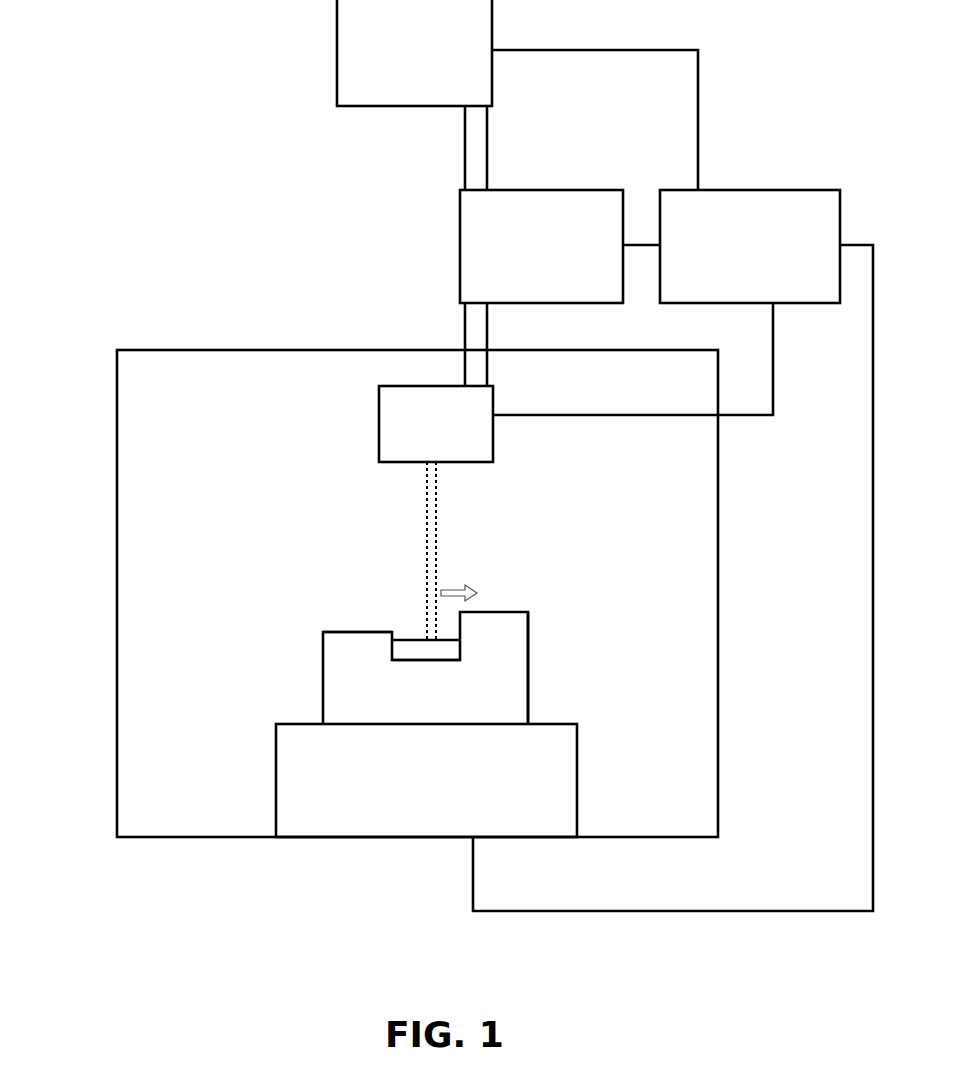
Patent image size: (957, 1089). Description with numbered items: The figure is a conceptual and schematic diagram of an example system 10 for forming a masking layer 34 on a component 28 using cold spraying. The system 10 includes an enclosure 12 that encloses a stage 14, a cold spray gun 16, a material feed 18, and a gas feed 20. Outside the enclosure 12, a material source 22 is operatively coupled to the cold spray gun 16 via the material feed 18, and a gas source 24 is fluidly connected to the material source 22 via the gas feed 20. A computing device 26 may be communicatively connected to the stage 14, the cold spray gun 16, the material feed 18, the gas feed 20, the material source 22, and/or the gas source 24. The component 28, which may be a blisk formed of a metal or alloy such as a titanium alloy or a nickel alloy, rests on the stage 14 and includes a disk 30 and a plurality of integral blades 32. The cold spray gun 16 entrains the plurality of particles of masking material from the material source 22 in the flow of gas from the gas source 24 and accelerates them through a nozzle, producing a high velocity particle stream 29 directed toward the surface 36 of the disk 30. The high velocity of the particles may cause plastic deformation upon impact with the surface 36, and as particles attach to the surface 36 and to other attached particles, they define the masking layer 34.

The system 10 is at (103, 55).
The enclosure 12 is at (117, 790).
The stage 14 is at (276, 790).
The cold spray gun 16 is at (379, 424).
The material feed 18 is at (488, 358).
The gas feed 20 is at (465, 162).
The material source 22 is at (527, 287).
The gas source 24 is at (400, 90).
The computing device 26 is at (736, 287).
The component 28 is at (296, 668).
The high velocity particle stream 29 is at (437, 500).
The disk 30 is at (517, 713).
The integral blades 32 is at (333, 638).
The masking layer 34 is at (453, 650).
The surface 36 is at (412, 658).